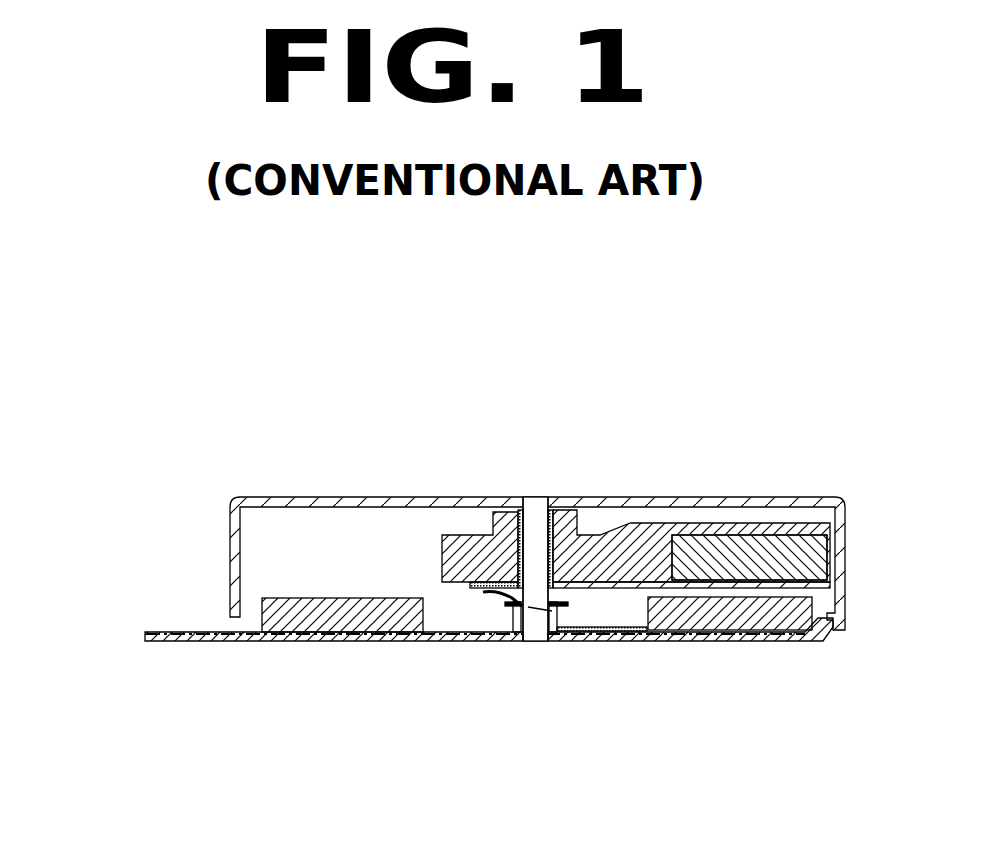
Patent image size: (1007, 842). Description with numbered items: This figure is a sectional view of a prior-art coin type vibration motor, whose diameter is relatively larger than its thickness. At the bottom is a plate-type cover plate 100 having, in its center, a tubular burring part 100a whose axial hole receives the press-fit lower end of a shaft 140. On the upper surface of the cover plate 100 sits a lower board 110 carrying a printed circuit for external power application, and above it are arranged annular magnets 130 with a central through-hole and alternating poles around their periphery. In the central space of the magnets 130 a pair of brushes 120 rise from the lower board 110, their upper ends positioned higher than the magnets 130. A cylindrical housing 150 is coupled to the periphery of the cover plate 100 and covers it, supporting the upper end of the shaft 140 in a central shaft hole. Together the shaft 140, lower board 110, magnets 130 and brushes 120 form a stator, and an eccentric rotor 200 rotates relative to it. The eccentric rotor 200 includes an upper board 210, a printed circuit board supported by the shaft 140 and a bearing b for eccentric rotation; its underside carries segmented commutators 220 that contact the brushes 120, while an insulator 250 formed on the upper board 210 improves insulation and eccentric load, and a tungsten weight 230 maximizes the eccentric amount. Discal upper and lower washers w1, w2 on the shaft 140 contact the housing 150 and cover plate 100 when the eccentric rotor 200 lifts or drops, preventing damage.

The eccentric rotor 200 is at (418, 514).
The cover plate 100 is at (158, 643).
The lower board 110 is at (173, 632).
The magnets 130 is at (405, 612).
The bearing b is at (492, 516).
The shaft 140 is at (542, 500).
The upper washer w1 is at (512, 512).
The insulator 250 is at (652, 527).
The cylindrical housing 150 is at (718, 502).
The weight 230 is at (798, 548).
The upper board 210 is at (598, 588).
The commutators 220 is at (600, 628).
The brushes 120 is at (617, 628).
The lower washer w2 is at (518, 598).
The tubular burring part 100a is at (530, 618).